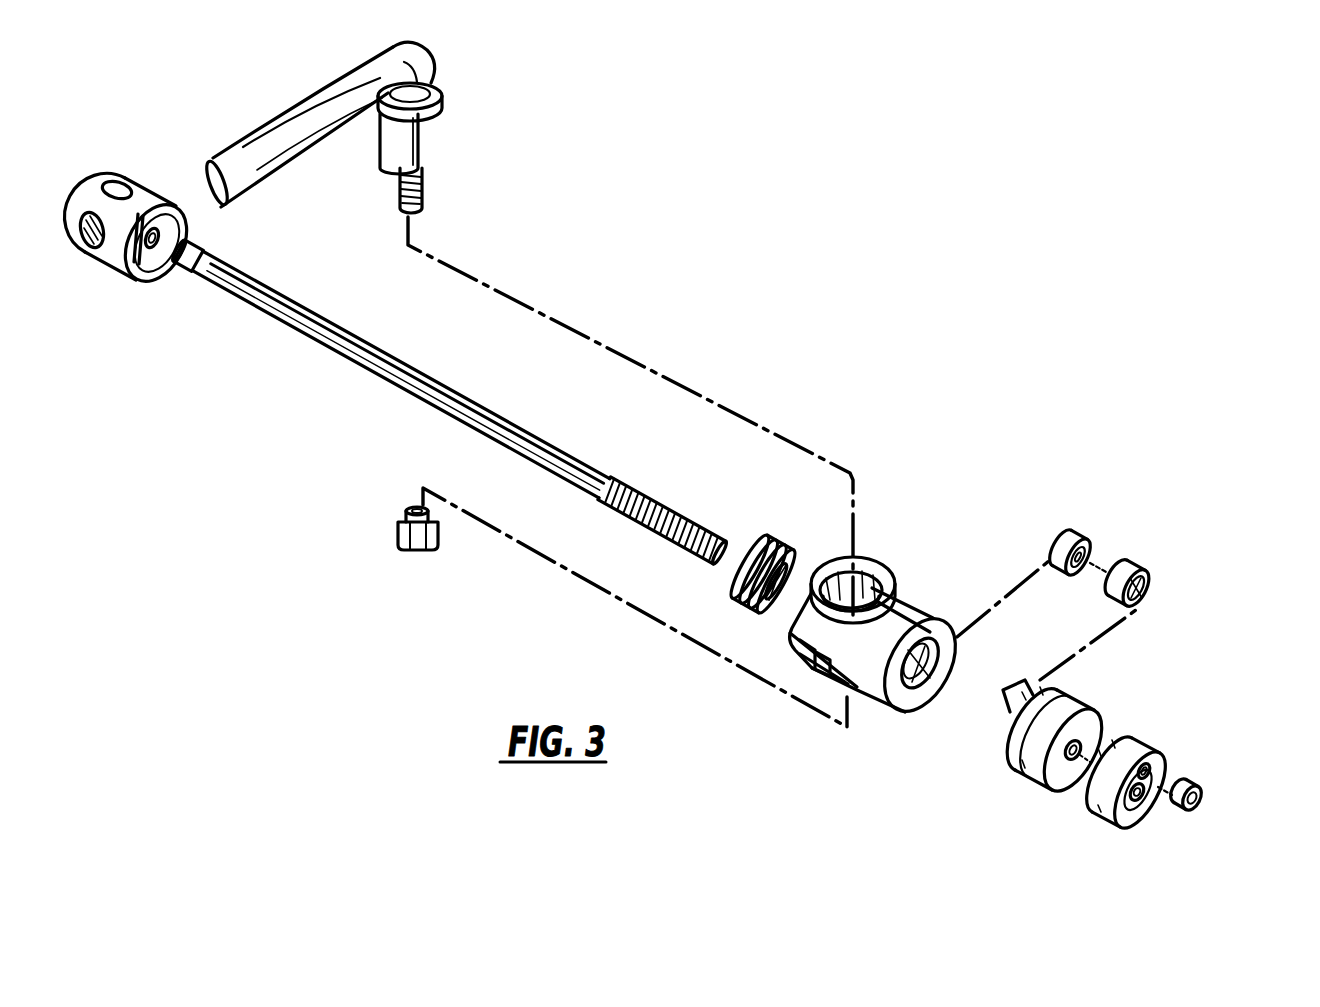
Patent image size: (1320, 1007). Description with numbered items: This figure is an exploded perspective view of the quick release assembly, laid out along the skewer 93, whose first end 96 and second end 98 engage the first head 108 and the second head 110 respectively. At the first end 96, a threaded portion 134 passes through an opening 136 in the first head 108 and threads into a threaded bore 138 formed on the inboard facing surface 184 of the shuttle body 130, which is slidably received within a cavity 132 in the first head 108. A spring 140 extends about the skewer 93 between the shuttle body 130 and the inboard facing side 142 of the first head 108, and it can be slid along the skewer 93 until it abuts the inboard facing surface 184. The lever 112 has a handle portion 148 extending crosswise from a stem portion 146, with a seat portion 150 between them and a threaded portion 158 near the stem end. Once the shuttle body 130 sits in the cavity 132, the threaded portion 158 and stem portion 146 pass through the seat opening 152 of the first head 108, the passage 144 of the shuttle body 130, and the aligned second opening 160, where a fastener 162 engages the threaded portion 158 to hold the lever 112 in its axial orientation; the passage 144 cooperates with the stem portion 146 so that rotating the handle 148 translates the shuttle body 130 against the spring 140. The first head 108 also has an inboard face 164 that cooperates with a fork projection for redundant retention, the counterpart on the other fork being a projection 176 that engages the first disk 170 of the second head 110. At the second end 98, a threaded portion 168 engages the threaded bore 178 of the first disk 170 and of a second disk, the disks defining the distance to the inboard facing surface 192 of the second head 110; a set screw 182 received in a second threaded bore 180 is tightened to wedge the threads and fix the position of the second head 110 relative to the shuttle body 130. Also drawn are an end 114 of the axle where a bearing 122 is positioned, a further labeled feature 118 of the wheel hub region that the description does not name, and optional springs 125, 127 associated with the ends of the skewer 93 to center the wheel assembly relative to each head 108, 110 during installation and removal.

The skewer 93 is at (352, 334).
The first end of skewer 96 is at (196, 289).
The second end of skewer 98 is at (665, 487).
The first head 108 is at (963, 535).
The second head 110 is at (1255, 691).
The lever 112 is at (351, 68).
The end of axle 114 is at (110, 182).
The hub bore 118 is at (1140, 800).
The bearing 122 is at (1153, 560).
The spring 125 is at (1082, 524).
The spring 127 is at (907, 102).
The shuttle body 130 is at (142, 283).
The cavity 132 is at (781, 618).
The threaded portion 134 is at (184, 275).
The opening 136 is at (887, 717).
The threaded bore 138 is at (162, 240).
The spring 140 is at (765, 535).
The inboard facing side 142 is at (946, 620).
The passage 144 is at (138, 167).
The stem portion 146 is at (381, 157).
The handle portion 148 is at (297, 118).
The seat portion 150 is at (445, 96).
The opening 152 is at (862, 561).
The threaded portion 158 is at (425, 196).
The second opening 160 is at (830, 703).
The fastener 162 is at (396, 533).
The inboard face 164 is at (929, 705).
The threaded portion 168 is at (694, 530).
The first disk 170 is at (1023, 783).
The projection 176 is at (1132, 740).
The threaded bore 178 is at (1070, 746).
The second threaded bore 180 is at (1150, 748).
The set screw 182 is at (1207, 790).
The inboard facing surface 184 is at (180, 223).
The inboard facing surface 192 is at (1012, 760).